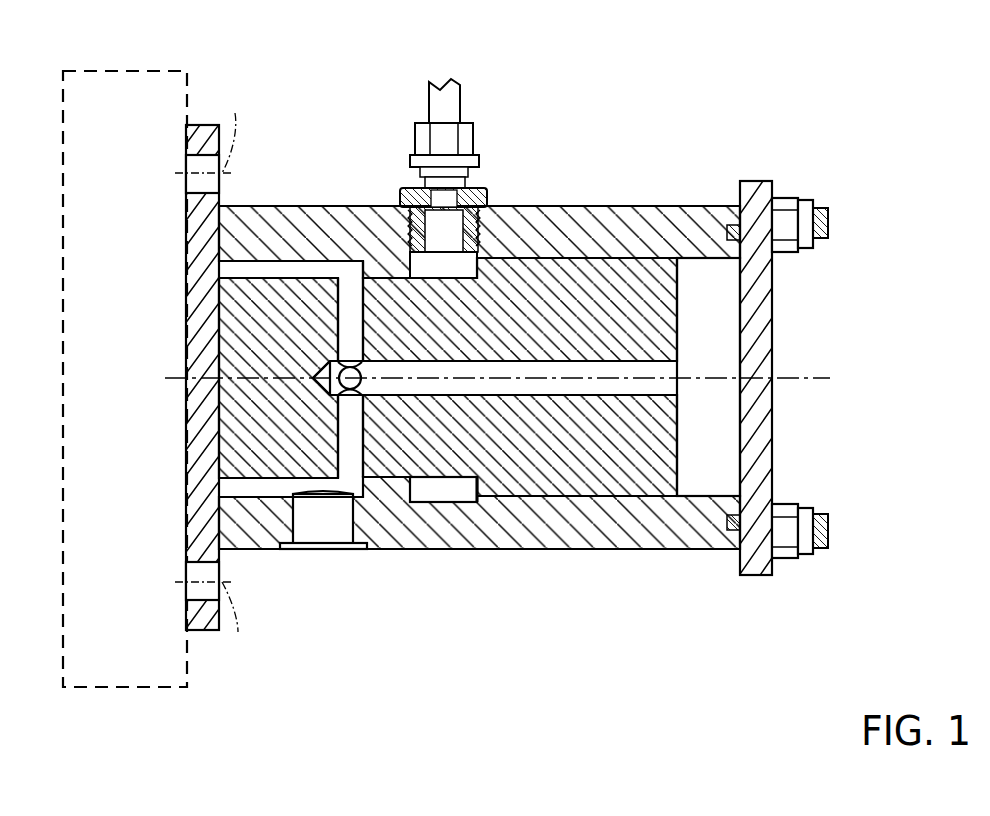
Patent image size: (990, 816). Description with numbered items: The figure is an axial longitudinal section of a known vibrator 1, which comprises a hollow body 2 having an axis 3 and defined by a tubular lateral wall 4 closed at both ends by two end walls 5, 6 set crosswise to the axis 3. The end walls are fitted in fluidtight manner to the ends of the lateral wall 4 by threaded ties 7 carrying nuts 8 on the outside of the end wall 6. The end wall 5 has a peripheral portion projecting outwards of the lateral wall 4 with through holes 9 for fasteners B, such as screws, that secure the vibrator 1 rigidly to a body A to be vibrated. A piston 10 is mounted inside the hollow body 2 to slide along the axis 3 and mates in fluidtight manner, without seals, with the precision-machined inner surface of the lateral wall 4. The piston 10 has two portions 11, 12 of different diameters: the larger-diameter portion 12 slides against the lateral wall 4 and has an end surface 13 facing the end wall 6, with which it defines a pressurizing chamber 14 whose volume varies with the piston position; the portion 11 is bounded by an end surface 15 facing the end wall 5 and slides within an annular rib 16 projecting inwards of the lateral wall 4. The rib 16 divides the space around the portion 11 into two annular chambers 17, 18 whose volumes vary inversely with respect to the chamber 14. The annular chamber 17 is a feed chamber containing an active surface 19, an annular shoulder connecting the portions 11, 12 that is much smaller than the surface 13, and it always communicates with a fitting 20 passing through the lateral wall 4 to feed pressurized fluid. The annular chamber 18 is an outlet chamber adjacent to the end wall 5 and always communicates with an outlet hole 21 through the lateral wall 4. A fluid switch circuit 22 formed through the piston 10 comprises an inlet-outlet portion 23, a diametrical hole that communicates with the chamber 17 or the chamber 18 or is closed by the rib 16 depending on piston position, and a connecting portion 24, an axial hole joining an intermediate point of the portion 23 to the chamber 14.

The vibrator 1 is at (499, 121).
The hollow body 2 is at (517, 203).
The axis 3 is at (184, 378).
The tubular lateral wall 4 is at (612, 526).
The end wall 5 is at (187, 389).
The end wall 6 is at (767, 312).
The threaded ties 7 is at (823, 226).
The nuts 8 is at (785, 221).
The through holes 9 is at (197, 170).
The piston 10 is at (297, 267).
The smaller-diameter portion 11 is at (248, 432).
The larger-diameter portion 12 is at (586, 275).
The end surface 13 is at (685, 408).
The pressurizing chamber 14 is at (712, 481).
The end surface 15 is at (213, 363).
The annular rib 16 is at (385, 481).
The annular chamber 17 is at (428, 491).
The annular chamber 18 is at (245, 488).
The active surface 19 is at (468, 490).
The fitting 20 is at (428, 147).
The outlet hole 21 is at (327, 512).
The fluid switch circuit 22 is at (510, 351).
The inlet-outlet portion 23 is at (346, 302).
The connecting portion 24 is at (628, 363).
The body A is at (109, 102).
The fasteners B is at (235, 372).